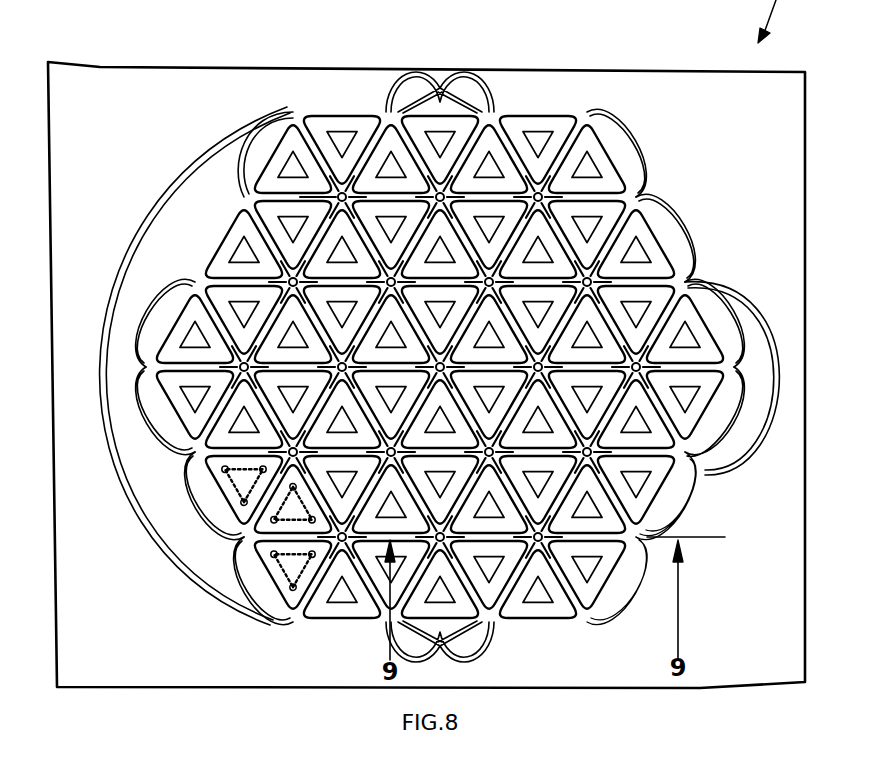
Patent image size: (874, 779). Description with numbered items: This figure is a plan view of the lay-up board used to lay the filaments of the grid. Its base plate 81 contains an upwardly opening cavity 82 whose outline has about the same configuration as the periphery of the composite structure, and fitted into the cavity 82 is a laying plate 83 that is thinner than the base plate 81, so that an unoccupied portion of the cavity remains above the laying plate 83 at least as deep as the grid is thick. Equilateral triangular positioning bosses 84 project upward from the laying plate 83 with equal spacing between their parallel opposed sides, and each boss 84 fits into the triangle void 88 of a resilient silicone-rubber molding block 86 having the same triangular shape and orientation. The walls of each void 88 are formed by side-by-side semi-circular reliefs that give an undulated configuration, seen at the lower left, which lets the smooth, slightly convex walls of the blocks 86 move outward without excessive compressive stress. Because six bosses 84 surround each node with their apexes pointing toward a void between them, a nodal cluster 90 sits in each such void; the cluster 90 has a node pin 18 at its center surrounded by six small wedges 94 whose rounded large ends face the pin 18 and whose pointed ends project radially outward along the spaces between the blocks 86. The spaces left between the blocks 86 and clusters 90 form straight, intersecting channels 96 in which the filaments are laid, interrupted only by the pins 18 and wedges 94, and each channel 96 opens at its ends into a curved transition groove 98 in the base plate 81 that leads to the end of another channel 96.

The node pin 18 is at (340, 186).
The base plate 81 is at (678, 95).
The cavity 82 is at (520, 115).
The laying plate 83 is at (580, 125).
The positioning boss 84 is at (340, 592).
The molding block 86 is at (240, 235).
The triangle void 88 is at (242, 472).
The nodal cluster 90 is at (647, 530).
The wedge 94 is at (330, 199).
The channel 96 is at (334, 188).
The curved transition groove 98 is at (468, 96).